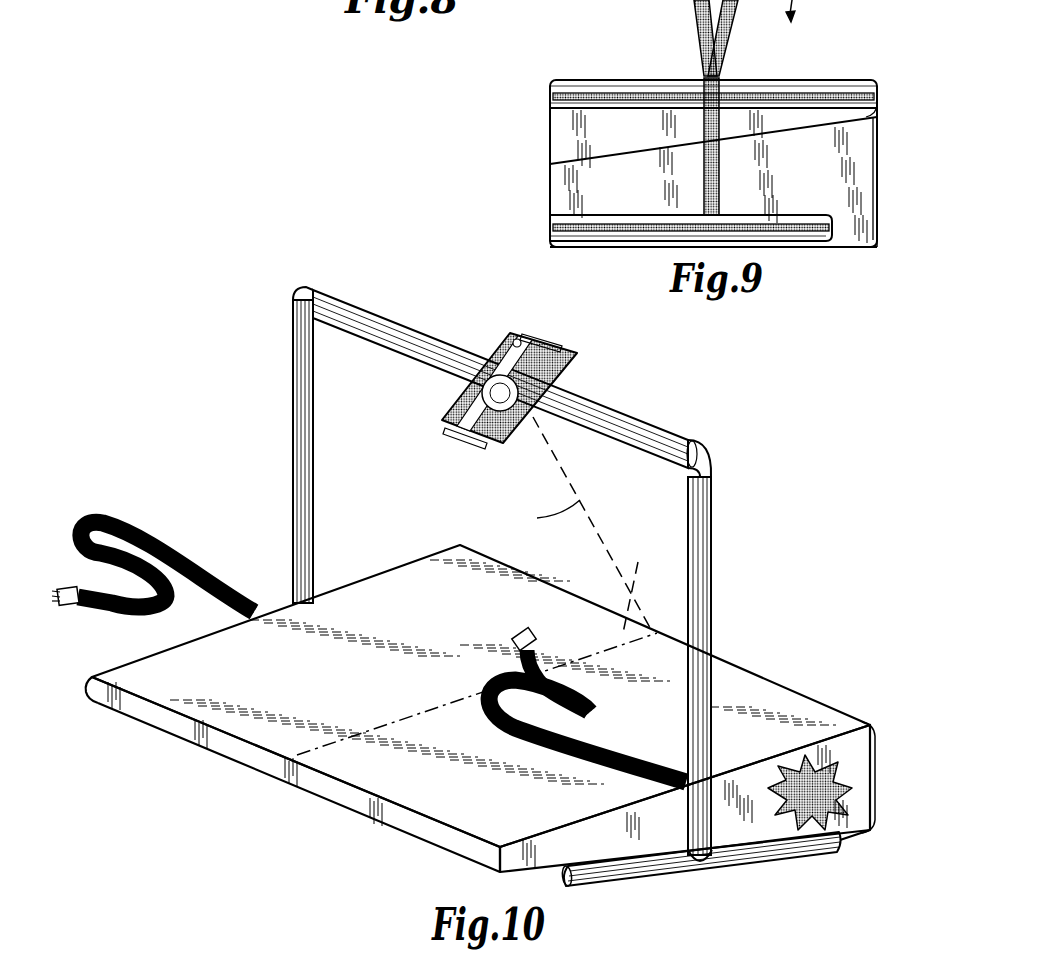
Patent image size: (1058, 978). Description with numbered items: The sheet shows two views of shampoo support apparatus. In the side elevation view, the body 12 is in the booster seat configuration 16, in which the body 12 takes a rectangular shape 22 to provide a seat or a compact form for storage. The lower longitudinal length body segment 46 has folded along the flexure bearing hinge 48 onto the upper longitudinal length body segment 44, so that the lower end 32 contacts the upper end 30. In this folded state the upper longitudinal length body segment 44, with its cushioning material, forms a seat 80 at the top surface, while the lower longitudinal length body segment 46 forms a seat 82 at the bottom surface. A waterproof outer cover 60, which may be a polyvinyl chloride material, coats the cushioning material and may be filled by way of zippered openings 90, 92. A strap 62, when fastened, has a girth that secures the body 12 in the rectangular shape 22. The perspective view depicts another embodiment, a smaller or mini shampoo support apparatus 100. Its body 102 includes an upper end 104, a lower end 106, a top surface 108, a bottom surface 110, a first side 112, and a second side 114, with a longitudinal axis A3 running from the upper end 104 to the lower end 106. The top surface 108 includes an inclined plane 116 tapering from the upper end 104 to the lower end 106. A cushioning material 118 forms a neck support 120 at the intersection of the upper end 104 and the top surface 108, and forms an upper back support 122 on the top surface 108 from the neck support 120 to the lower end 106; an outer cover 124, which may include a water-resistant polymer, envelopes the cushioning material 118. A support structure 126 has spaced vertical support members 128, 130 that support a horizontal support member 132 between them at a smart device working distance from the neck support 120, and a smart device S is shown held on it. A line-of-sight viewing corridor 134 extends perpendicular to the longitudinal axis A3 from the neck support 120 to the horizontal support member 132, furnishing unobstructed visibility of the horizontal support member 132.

In FIG. 9, the body 12 is at (545, 196).
In FIG. 9, the booster seat configuration 16 is at (545, 129).
In FIG. 9, the rectangular shape 22 is at (586, 90).
In FIG. 9, the upper end 30 is at (877, 125).
In FIG. 9, the lower end 32 is at (873, 117).
In FIG. 9, the upper longitudinal length body segment 44 is at (840, 200).
In FIG. 9, the lower longitudinal length body segment 46 is at (790, 118).
In FIG. 9, the flexure bearing hinge 48 is at (550, 163).
In FIG. 9, the outer cover 60 is at (850, 235).
In FIG. 9, the strap 62 is at (715, 118).
In FIG. 9, the seat 80 is at (620, 155).
In FIG. 9, the seat 82 is at (636, 80).
In FIG. 9, the zippered opening 90 is at (550, 226).
In FIG. 9, the zippered opening 92 is at (810, 96).
In FIG. 10, the shampoo support apparatus 100 is at (216, 410).
In FIG. 10, the body 102 is at (875, 758).
In FIG. 10, the upper end 104 is at (766, 690).
In FIG. 10, the lower end 106 is at (452, 812).
In FIG. 10, the top surface 108 is at (370, 613).
In FIG. 10, the bottom surface 110 is at (293, 787).
In FIG. 10, the first side 112 is at (868, 835).
In FIG. 10, the second side 114 is at (215, 630).
In FIG. 10, the inclined plane 116 is at (738, 773).
In FIG. 10, the cushioning material 118 is at (810, 782).
In FIG. 10, the neck support 120 is at (638, 540).
In FIG. 10, the upper back support 122 is at (440, 607).
In FIG. 10, the outer cover 124 is at (133, 670).
In FIG. 10, the support structure 126 is at (708, 456).
In FIG. 10, the vertical support member 128 is at (705, 597).
In FIG. 10, the vertical support member 130 is at (297, 438).
In FIG. 10, the horizontal support member 132 is at (400, 333).
In FIG. 10, the line-of-sight viewing corridor 134 is at (539, 516).
In FIG. 10, the longitudinal axis A3 is at (400, 718).
In FIG. 10, the smart device holder S is at (575, 350).